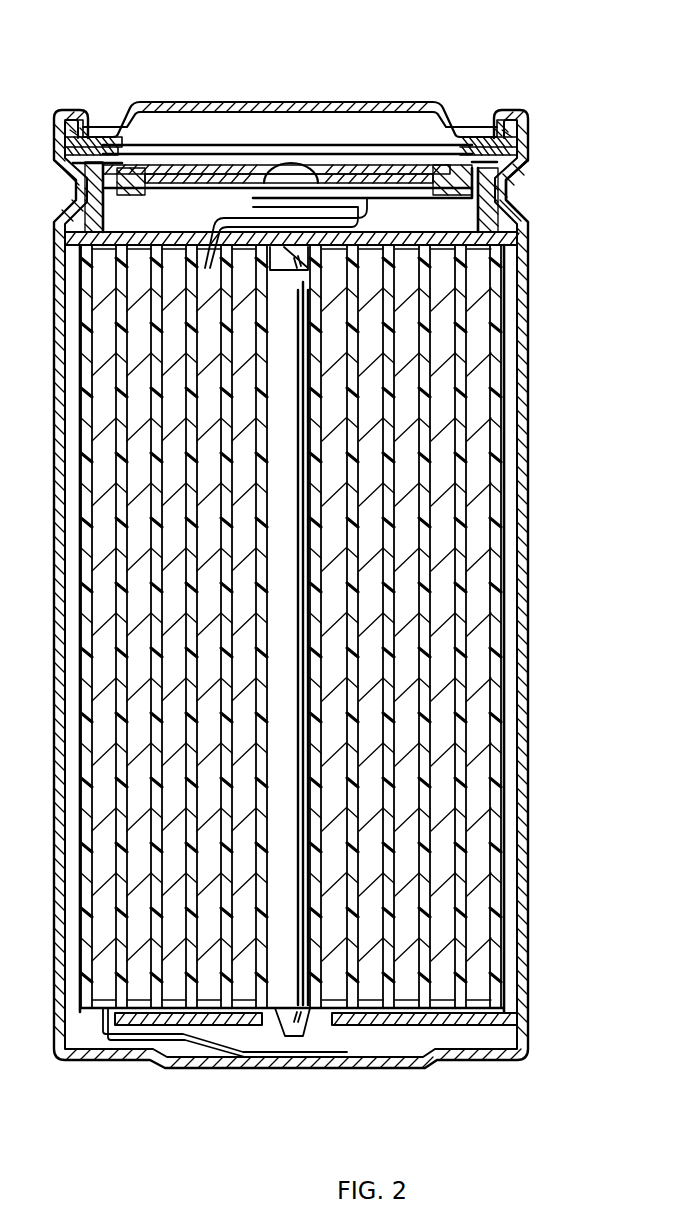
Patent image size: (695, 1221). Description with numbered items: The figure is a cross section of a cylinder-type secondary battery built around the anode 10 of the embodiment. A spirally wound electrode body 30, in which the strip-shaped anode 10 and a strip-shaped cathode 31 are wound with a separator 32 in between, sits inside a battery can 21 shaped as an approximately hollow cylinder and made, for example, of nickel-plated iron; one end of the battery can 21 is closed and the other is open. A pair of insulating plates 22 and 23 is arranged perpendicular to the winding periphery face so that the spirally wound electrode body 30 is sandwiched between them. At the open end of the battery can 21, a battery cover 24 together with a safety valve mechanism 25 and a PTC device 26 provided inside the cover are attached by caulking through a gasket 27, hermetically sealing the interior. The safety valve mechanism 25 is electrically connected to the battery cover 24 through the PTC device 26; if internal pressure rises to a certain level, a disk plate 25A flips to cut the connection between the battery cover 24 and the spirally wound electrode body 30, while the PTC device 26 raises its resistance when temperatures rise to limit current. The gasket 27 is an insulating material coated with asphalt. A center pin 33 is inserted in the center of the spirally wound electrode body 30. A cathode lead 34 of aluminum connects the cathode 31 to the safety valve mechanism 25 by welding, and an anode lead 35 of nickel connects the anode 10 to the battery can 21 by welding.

The anode 10 is at (331, 640).
The battery can 21 is at (529, 293).
The insulating plate 22 is at (514, 240).
The insulating plate 23 is at (506, 1018).
The battery cover 24 is at (262, 101).
The safety valve mechanism 25 is at (405, 168).
The disk plate 25A is at (368, 166).
The PTC device 26 is at (513, 150).
The gasket 27 is at (524, 207).
The spirally wound electrode body 30 is at (506, 403).
The cathode 31 is at (448, 482).
The separator 32 is at (461, 600).
The center pin 33 is at (290, 641).
The cathode lead 34 is at (262, 172).
The anode lead 35 is at (198, 1052).